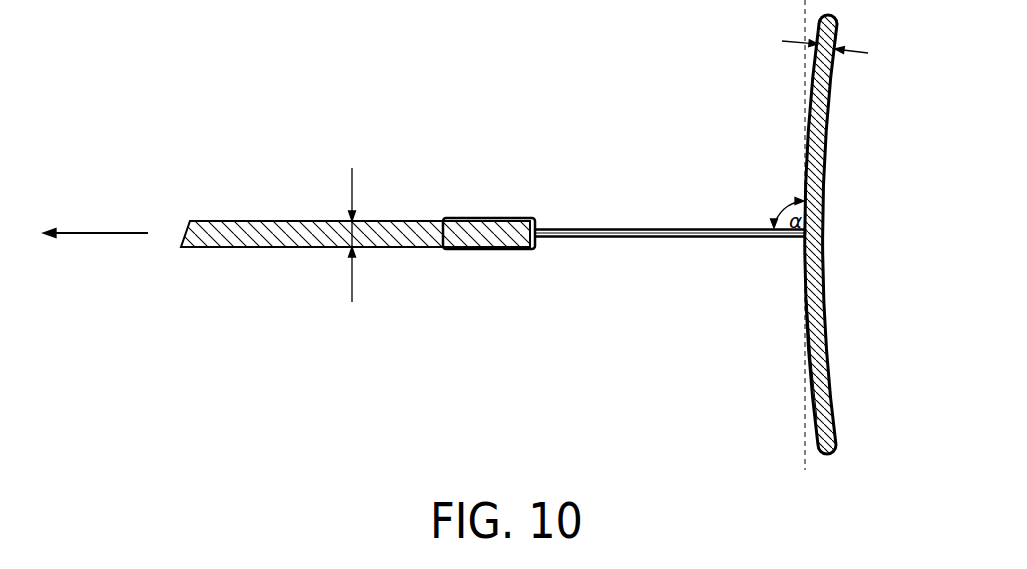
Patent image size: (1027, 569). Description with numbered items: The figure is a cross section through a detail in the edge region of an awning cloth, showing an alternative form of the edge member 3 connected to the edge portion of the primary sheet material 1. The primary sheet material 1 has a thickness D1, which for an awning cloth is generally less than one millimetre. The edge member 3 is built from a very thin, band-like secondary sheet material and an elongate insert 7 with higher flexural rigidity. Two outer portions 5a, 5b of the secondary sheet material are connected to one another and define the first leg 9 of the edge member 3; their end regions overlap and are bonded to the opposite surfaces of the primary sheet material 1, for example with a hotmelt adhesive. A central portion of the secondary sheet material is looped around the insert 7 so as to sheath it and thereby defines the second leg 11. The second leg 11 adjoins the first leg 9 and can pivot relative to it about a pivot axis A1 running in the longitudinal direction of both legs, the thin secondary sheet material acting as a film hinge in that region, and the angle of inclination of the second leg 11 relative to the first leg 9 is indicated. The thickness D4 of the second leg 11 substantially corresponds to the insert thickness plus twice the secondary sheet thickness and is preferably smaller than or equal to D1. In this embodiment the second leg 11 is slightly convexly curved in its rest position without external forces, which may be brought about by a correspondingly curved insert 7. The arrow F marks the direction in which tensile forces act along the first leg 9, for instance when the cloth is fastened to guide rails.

The primary sheet material 1 is at (259, 221).
The edge member 3 is at (646, 243).
The outer portion of the secondary sheet material 5a is at (634, 230).
The outer portion of the secondary sheet material 5b is at (573, 238).
The insert 7 is at (826, 150).
The first leg 9 is at (612, 228).
The second leg 11 is at (808, 350).
The pivot axis A1 is at (806, 238).
The thickness of the primary sheet material D1 is at (334, 235).
The thickness of the second leg D4 is at (831, 39).
The direction of tensile force F is at (118, 233).